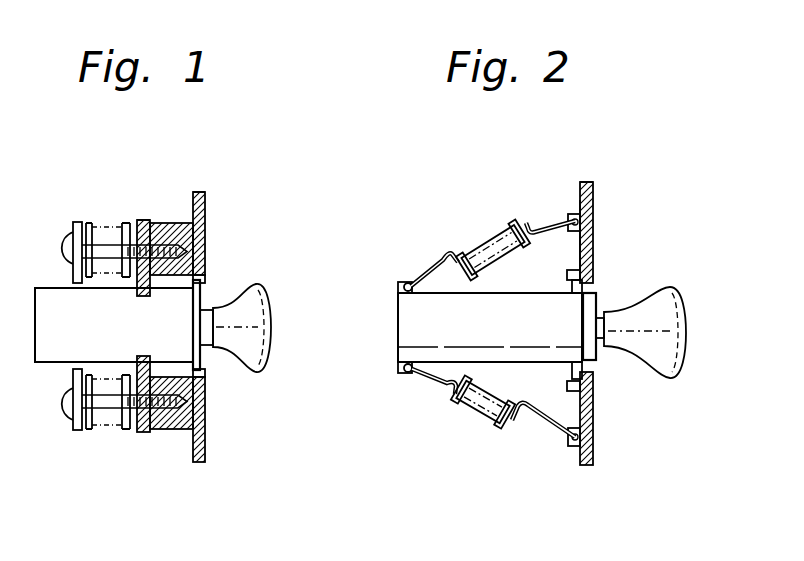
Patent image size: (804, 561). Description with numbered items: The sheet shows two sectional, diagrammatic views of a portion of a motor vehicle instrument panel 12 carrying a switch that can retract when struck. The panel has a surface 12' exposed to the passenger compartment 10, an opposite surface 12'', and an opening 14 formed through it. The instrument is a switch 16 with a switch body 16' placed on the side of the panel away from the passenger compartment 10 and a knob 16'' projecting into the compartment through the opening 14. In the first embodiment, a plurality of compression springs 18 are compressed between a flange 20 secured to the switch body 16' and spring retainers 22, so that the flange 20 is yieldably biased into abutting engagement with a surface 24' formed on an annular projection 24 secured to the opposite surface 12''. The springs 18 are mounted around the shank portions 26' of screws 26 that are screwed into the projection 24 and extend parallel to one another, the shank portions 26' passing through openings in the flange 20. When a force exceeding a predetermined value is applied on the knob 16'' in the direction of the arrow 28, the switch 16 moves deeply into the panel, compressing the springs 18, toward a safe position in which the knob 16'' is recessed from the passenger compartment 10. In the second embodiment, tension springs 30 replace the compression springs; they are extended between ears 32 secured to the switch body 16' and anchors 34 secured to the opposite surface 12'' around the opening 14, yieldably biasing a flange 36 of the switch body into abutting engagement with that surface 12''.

In FIG. 1, the passenger compartment 10 is at (318, 408).
In FIG. 1, the instrument panel 12 is at (223, 309).
In FIG. 2, the instrument panel 12 is at (601, 294).
In FIG. 1, the surface 12' is at (207, 242).
In FIG. 2, the surface 12' is at (612, 235).
In FIG. 1, the opposite surface 12'' is at (183, 158).
In FIG. 2, the opposite surface 12'' is at (564, 168).
In FIG. 1, the opening 14 is at (205, 279).
In FIG. 2, the opening 14 is at (594, 282).
In FIG. 1, the switch 16 is at (124, 325).
In FIG. 2, the switch 16 is at (501, 327).
In FIG. 1, the switch body 16' is at (53, 343).
In FIG. 2, the switch body 16' is at (376, 327).
In FIG. 1, the knob 16'' is at (250, 348).
In FIG. 2, the knob 16'' is at (645, 354).
In FIG. 1, the springs 18 is at (95, 223).
In FIG. 1, the flange 20 is at (153, 431).
In FIG. 1, the spring retainers 22 is at (82, 224).
In FIG. 1, the annular projection 24 is at (154, 225).
In FIG. 1, the surface 24' is at (140, 202).
In FIG. 1, the screws 26 is at (136, 421).
In FIG. 1, the shank portions 26' is at (106, 332).
In FIG. 1, the arrow 28 is at (338, 328).
In FIG. 2, the tension springs 30 is at (534, 430).
In FIG. 2, the ears 32 is at (407, 374).
In FIG. 2, the anchors 34 is at (571, 216).
In FIG. 2, the flange 36 is at (572, 288).